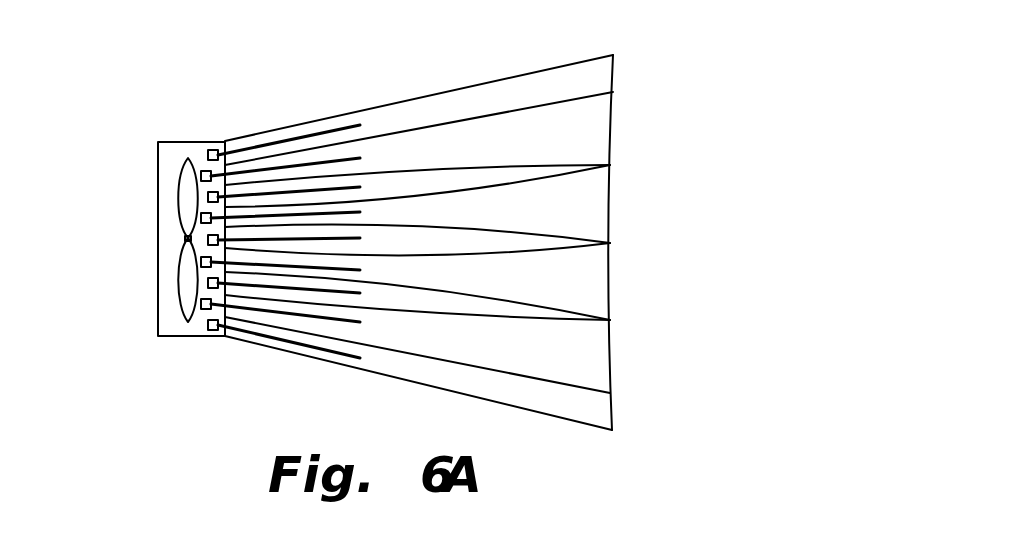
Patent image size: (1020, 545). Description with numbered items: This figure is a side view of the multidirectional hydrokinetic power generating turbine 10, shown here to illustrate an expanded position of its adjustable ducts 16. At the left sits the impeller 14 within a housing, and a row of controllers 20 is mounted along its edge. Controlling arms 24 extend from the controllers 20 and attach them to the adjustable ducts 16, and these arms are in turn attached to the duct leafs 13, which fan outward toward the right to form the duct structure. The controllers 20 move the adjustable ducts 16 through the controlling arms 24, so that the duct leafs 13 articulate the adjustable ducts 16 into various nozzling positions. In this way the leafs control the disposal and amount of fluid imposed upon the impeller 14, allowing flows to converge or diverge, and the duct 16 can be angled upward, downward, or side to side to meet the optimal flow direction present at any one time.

The multidirectional hydrokinetic power generating turbine 10 is at (680, 37).
The duct leafs 13 is at (577, 136).
The impeller 14 is at (180, 292).
The adjustable ducts 16 is at (608, 228).
The controllers 20 is at (209, 147).
The controlling arms 24 is at (327, 124).